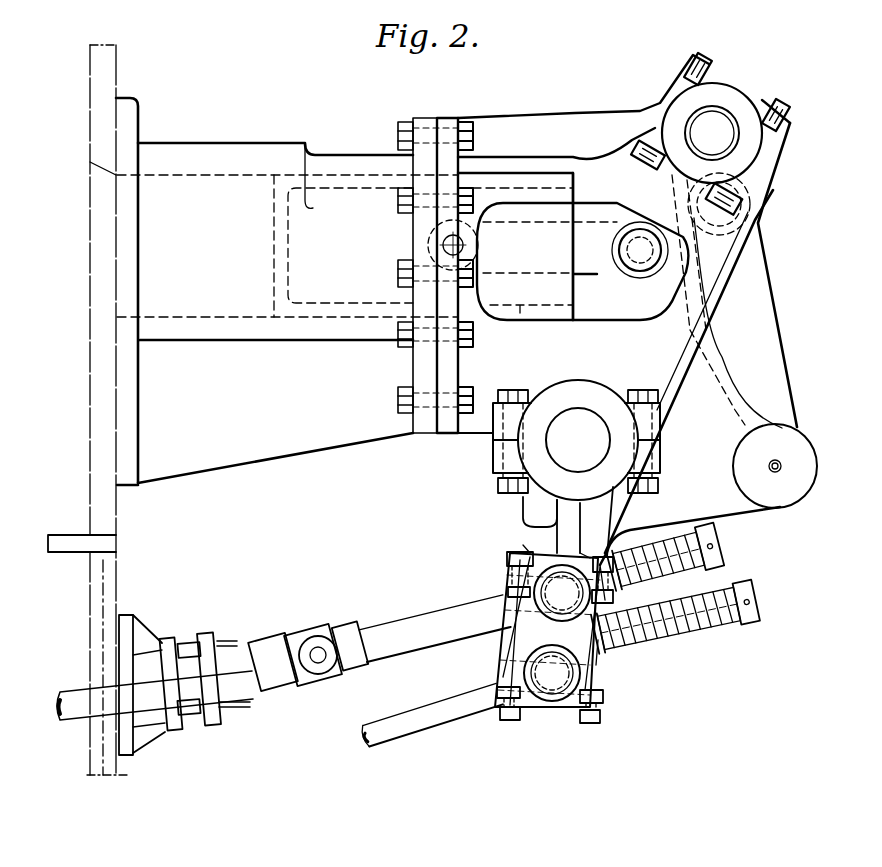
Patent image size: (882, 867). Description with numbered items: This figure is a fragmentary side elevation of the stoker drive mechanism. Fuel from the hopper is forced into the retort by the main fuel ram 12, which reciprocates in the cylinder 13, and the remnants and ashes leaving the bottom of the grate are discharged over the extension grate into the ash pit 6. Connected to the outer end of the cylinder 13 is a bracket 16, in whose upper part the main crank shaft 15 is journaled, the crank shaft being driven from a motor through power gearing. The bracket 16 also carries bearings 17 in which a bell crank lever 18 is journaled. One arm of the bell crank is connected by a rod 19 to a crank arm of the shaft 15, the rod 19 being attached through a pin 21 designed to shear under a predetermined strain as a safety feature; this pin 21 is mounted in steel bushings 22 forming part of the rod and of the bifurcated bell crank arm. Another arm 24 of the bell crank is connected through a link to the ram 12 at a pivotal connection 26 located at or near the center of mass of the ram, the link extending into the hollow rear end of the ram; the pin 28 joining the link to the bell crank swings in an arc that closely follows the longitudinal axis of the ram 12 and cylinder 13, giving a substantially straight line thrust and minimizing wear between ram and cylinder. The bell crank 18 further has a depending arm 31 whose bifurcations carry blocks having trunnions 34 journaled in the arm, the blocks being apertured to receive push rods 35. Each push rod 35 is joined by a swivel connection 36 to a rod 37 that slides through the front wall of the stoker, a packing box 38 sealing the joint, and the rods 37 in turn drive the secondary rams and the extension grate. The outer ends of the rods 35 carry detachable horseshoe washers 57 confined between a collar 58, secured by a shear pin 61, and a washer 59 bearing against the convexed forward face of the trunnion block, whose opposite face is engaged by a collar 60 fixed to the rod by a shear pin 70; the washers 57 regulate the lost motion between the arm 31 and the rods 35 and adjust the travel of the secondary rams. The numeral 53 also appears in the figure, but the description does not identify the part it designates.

The ash pit 6 is at (578, 410).
The main fuel ram 12 is at (275, 249).
The cylinder 13 is at (273, 151).
The main crank shaft 15 is at (717, 122).
The bracket 16 is at (530, 125).
The bearings 17 is at (553, 447).
The bell crank lever 18 is at (703, 378).
The rod 19 is at (760, 312).
The pin 21 is at (785, 463).
The steel bushings 22 is at (782, 469).
The arm 24 is at (582, 246).
The pivotal connection 26 is at (450, 245).
The pin 28 is at (636, 250).
The depending arm 31 is at (530, 512).
The trunnions 34 is at (571, 578).
The push rods 35 is at (438, 631).
The swivel connections 36 is at (329, 664).
The rods 37 is at (253, 677).
The packing boxes 38 is at (198, 690).
The carrier block 53 is at (547, 630).
The horseshoe washers 57 is at (640, 633).
The collar 58 is at (703, 538).
The washer 59 is at (610, 615).
The collar 60 is at (520, 607).
The pins 61 is at (718, 556).
The shear pin 70 is at (516, 589).